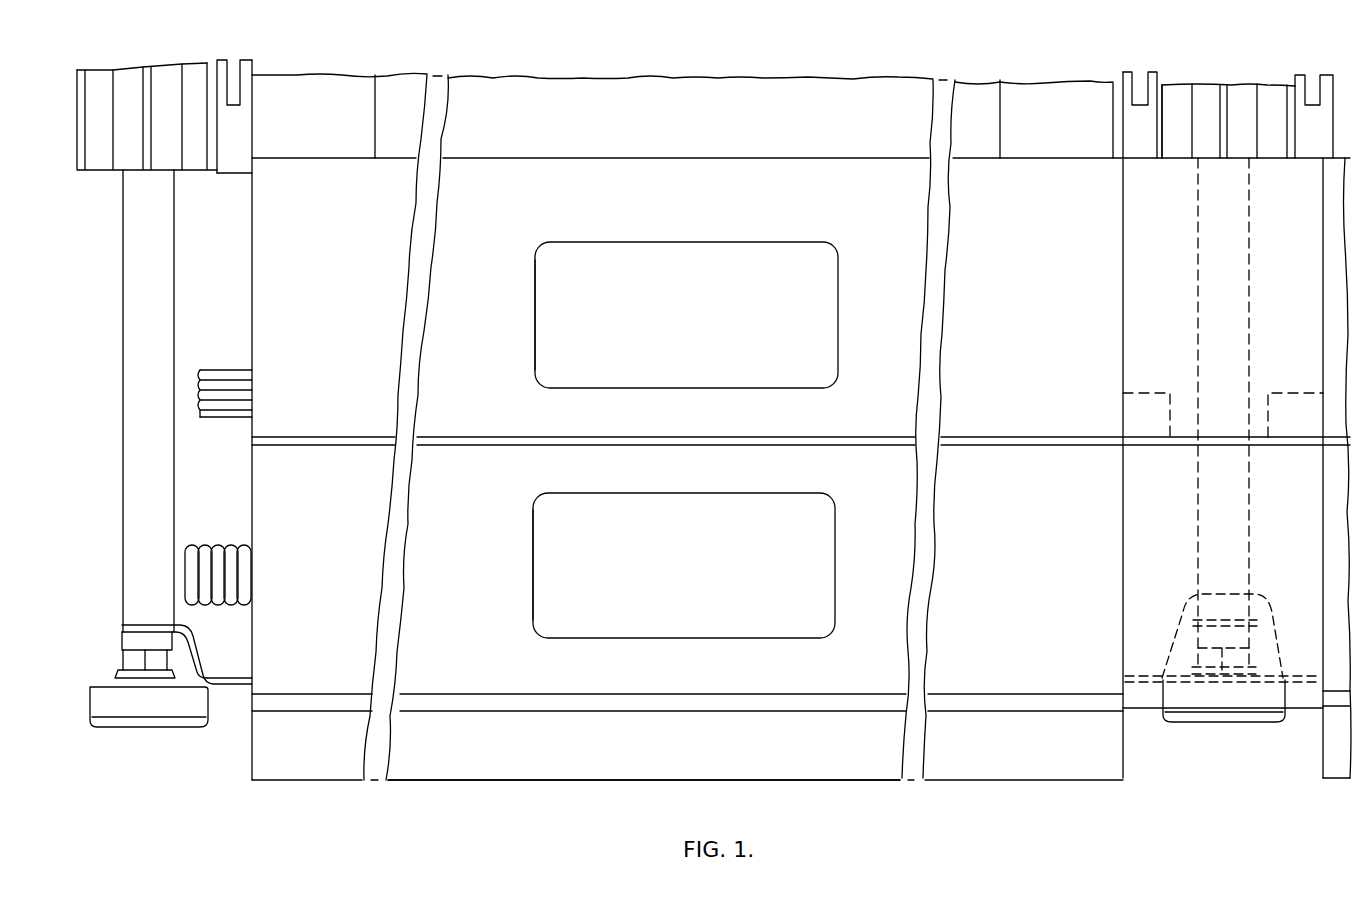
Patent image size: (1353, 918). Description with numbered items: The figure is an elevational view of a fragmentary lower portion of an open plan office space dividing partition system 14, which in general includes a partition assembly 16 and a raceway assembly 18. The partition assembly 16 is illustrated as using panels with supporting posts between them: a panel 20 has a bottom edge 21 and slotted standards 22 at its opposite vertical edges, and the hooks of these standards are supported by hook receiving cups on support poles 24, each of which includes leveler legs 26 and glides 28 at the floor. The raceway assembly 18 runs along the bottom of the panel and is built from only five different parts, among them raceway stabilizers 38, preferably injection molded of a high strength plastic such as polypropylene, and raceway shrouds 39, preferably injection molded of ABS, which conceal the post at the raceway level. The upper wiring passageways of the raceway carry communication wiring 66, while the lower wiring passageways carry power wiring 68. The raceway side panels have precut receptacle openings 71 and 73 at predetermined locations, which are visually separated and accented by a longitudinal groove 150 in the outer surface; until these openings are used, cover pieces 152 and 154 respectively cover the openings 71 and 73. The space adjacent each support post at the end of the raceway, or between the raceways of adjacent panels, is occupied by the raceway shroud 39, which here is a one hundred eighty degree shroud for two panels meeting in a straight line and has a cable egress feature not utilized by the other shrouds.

The open plan office space dividing partition system 14 is at (932, 836).
The partition assembly 16 is at (868, 80).
The raceway assembly 18 is at (460, 783).
The panel 20 is at (672, 80).
The bottom edge 21 is at (628, 172).
The slotted standards 22 is at (227, 60).
The support poles 24 is at (158, 63).
The leveler legs 26 is at (122, 316).
The glides 28 is at (86, 702).
The raceway stabilizers 38 is at (132, 625).
The raceway shroud 39 is at (1150, 338).
The communication wiring 66 is at (246, 370).
The power wiring 68 is at (245, 545).
The receptacle opening 71 is at (535, 562).
The receptacle opening 73 is at (536, 312).
The longitudinal groove 150 is at (485, 435).
The cover piece 152 is at (780, 507).
The cover piece 154 is at (760, 258).